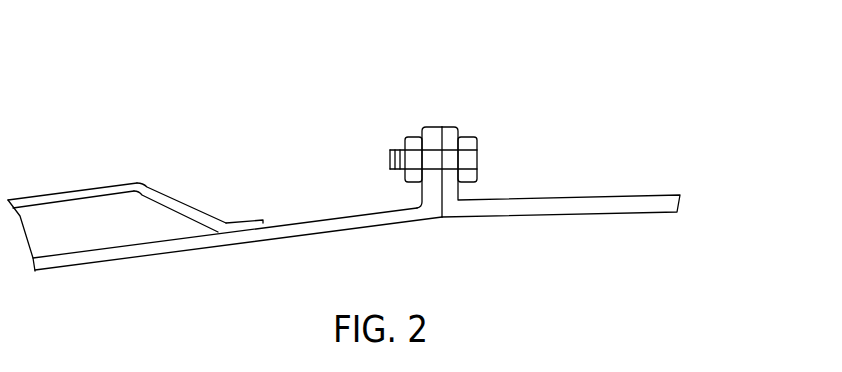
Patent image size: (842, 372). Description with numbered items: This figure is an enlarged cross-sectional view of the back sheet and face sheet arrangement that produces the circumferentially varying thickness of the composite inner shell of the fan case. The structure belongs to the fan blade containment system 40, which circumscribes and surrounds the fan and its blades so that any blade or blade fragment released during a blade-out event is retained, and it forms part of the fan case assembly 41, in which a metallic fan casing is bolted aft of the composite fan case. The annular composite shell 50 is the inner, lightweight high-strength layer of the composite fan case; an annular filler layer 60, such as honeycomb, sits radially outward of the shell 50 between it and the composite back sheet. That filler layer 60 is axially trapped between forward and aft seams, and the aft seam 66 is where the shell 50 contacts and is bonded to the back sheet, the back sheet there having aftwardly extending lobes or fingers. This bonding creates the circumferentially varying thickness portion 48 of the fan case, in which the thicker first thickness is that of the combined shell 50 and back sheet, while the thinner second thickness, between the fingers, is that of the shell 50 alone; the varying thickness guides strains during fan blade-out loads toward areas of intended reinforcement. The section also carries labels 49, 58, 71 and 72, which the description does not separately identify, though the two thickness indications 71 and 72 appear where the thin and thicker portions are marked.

The fan blade containment system 40 is at (172, 152).
The fan case assembly 41 is at (493, 98).
The circumferentially varying thickness portion 48 is at (558, 198).
The first plate 49 is at (272, 238).
The annular composite shell 50 is at (388, 225).
The bend 58 is at (187, 198).
The annular filler layer 60 is at (75, 218).
The aft seam 66 is at (253, 218).
The first thickness 71 is at (238, 197).
The second thickness 72 is at (345, 187).